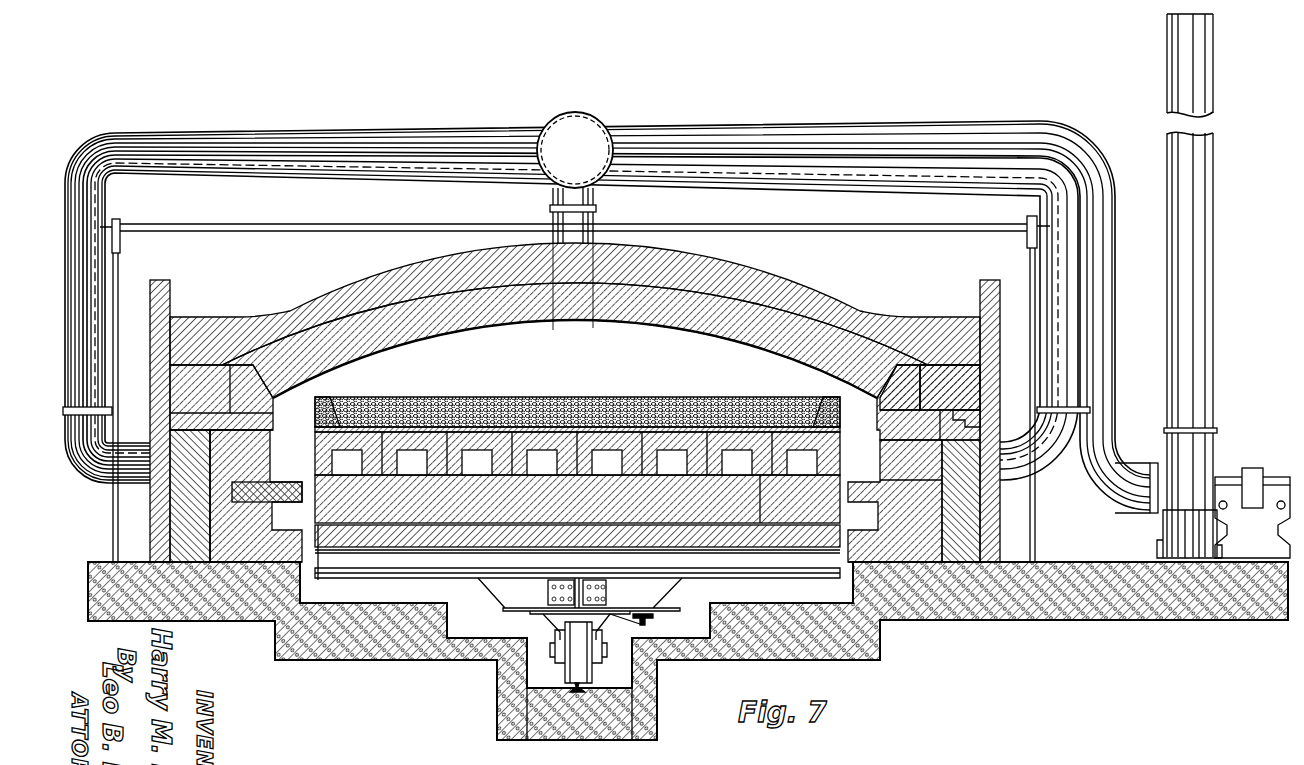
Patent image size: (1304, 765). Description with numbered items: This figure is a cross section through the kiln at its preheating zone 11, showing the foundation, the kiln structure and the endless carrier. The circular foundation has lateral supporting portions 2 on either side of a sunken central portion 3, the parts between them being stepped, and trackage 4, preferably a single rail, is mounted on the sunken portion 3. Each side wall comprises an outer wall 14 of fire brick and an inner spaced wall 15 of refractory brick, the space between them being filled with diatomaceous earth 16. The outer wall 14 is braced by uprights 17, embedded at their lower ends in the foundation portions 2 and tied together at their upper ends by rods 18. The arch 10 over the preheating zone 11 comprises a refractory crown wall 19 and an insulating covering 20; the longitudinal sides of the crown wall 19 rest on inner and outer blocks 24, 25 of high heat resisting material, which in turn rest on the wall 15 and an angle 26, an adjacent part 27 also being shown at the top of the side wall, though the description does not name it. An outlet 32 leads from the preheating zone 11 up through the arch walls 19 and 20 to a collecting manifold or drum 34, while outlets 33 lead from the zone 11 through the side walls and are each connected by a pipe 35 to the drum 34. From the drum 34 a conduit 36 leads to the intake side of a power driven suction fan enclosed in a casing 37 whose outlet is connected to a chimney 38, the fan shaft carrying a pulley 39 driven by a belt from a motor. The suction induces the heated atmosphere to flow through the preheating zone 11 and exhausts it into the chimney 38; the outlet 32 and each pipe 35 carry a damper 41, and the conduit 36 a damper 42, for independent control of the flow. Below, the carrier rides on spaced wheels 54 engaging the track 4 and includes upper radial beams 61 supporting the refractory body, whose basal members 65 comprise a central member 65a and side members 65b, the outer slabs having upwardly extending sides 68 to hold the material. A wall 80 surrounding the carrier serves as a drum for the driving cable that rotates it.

The lateral supporting portions 2 is at (183, 620).
The sunken central portion 3 is at (650, 694).
The trackage 4 is at (582, 688).
The arch 10 is at (575, 304).
The preheating zone 11 is at (597, 374).
The outer wall 14 is at (960, 530).
The inner spaced wall 15 is at (885, 458).
The diatomaceous earth 16 is at (930, 552).
The uprights 17 is at (112, 506).
The rods 18 is at (300, 237).
The crown wall 19 is at (648, 327).
The covering 20 is at (897, 318).
The inner blocks 24 is at (905, 370).
The outer blocks 25 is at (942, 370).
The angle 26 is at (983, 393).
The recess 27 is at (972, 425).
The outlet 32 is at (594, 236).
The outlets 33 is at (314, 432).
The collecting manifold or drum 34 is at (576, 128).
The pipe 35 is at (88, 283).
The conduit 36 is at (1100, 340).
The casing 37 is at (1165, 528).
The chimney 38 is at (1167, 209).
The pulley 39 is at (1252, 468).
The damper 41 is at (597, 210).
The damper 42 is at (1150, 500).
The wheels 54 is at (565, 667).
The upper radial beams 61 is at (750, 560).
The basal members 65 is at (577, 527).
The central member 65a is at (466, 488).
The side members 65b is at (292, 482).
The upwardly extending sides 68 is at (314, 407).
The wall 80 is at (642, 620).